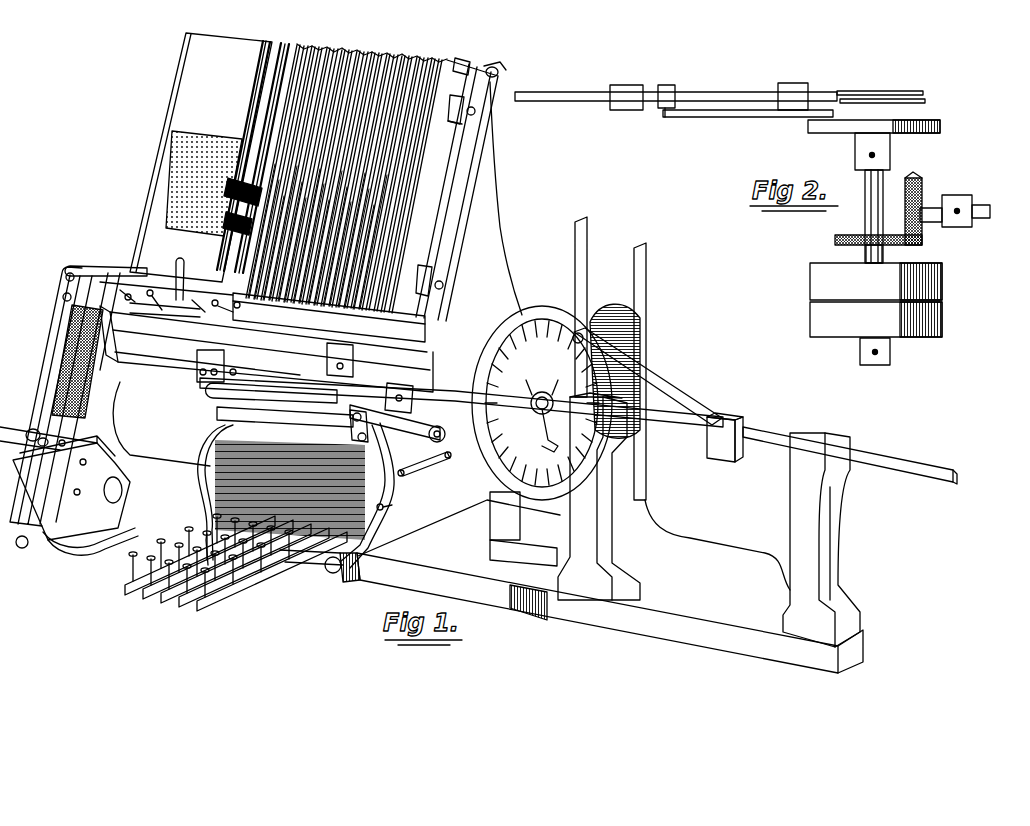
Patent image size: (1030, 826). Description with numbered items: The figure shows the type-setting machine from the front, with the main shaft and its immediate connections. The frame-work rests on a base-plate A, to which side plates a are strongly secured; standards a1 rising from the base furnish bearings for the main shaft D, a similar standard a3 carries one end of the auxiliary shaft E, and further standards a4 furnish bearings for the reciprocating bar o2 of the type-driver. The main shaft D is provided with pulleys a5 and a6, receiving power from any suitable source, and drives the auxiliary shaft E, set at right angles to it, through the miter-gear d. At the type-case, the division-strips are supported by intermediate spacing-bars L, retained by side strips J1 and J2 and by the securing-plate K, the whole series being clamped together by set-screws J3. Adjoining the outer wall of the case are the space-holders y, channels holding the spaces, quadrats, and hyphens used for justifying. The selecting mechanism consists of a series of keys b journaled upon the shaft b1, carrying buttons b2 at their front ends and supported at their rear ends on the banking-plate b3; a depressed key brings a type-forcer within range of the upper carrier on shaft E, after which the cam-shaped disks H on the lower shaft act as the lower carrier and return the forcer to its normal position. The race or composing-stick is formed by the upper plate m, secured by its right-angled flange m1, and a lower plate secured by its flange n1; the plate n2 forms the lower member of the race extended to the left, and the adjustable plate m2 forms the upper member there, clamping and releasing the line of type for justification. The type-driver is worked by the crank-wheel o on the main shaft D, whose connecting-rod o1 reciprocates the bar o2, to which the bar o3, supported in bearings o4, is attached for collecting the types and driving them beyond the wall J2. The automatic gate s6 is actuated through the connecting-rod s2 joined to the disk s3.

In FIG. 1, the intermediate spacing-bars L is at (201, 157).
In FIG. 1, the space-holders y is at (268, 44).
In FIG. 1, the side strip J2 is at (306, 45).
In FIG. 1, the side strip J1 is at (462, 58).
In FIG. 1, the securing-plate K is at (495, 68).
In FIG. 1, the set-screws J3 is at (474, 108).
In FIG. 1, the side pieces or plates a is at (495, 207).
In FIG. 1, the plate or bar m2 is at (152, 316).
In FIG. 1, the right-angled flange m1 is at (329, 317).
In FIG. 1, the plate or bar forming the upper member of the composing-stick m is at (271, 352).
In FIG. 1, the plate n2 is at (265, 340).
In FIG. 1, the bearings o4 is at (305, 381).
In FIG. 1, the bar o3 is at (340, 360).
In FIG. 2, the bar o3 is at (924, 95).
In FIG. 1, the auxiliary shaft E is at (466, 392).
In FIG. 1, the automatic gate s6 is at (279, 405).
In FIG. 1, the disk s3 is at (300, 412).
In FIG. 1, the right-angled flange n1 is at (395, 420).
In FIG. 1, the banking-plate b3 is at (446, 422).
In FIG. 1, the connecting-rod s2 is at (424, 459).
In FIG. 1, the shaft b1 is at (392, 501).
In FIG. 1, the cam-shaped disks H is at (190, 435).
In FIG. 1, the buttons b2 is at (222, 563).
In FIG. 1, the keys b is at (250, 578).
In FIG. 1, the pulley a6 is at (566, 312).
In FIG. 2, the pulley a6 is at (942, 298).
In FIG. 1, the crank-wheel o is at (546, 392).
In FIG. 2, the crank-wheel o is at (809, 120).
In FIG. 1, the main shaft D is at (542, 419).
In FIG. 2, the main shaft D is at (882, 216).
In FIG. 1, the pulley a5 is at (630, 320).
In FIG. 2, the pulley a5 is at (942, 334).
In FIG. 1, the connecting-rod o1 is at (647, 376).
In FIG. 1, the reciprocating bar o2 is at (832, 448).
In FIG. 2, the reciprocating bar o2 is at (676, 86).
In FIG. 1, the standards a4 is at (857, 566).
In FIG. 2, the standards a4 is at (712, 88).
In FIG. 1, the base-plate A is at (571, 586).
In FIG. 1, the standard a3 is at (492, 516).
In FIG. 2, the standard a3 is at (965, 200).
In FIG. 1, the standards a1 is at (512, 552).
In FIG. 2, the standards a1 is at (890, 160).
In FIG. 2, the miter-gear d is at (922, 184).